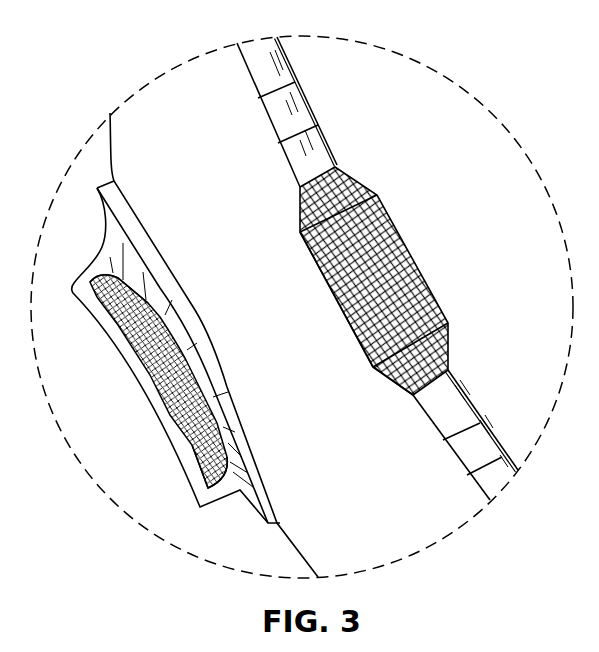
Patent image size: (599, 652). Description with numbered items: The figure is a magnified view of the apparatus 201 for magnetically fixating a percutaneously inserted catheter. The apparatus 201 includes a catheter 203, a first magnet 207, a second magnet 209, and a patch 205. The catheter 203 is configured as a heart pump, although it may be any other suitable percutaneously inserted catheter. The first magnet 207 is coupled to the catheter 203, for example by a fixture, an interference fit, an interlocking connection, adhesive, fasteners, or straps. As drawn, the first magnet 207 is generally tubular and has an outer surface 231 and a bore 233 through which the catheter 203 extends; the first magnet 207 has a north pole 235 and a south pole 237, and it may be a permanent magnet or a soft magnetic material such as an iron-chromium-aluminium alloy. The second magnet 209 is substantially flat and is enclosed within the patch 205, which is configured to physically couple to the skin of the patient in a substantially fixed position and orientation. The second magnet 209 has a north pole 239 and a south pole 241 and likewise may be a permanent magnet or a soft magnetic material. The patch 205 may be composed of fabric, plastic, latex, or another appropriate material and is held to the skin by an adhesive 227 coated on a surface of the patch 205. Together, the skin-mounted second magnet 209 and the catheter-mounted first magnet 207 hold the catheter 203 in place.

The apparatus 201 is at (114, 60).
The catheter 203 is at (440, 431).
The patch 205 is at (135, 366).
The first magnet 207 is at (415, 265).
The second magnet 209 is at (190, 427).
The adhesive 227 is at (145, 250).
The outer surface 231 is at (322, 272).
The bore 233 is at (418, 395).
The north pole 235 is at (350, 188).
The south pole 237 is at (425, 362).
The north pole 239 is at (207, 487).
The south pole 241 is at (110, 307).